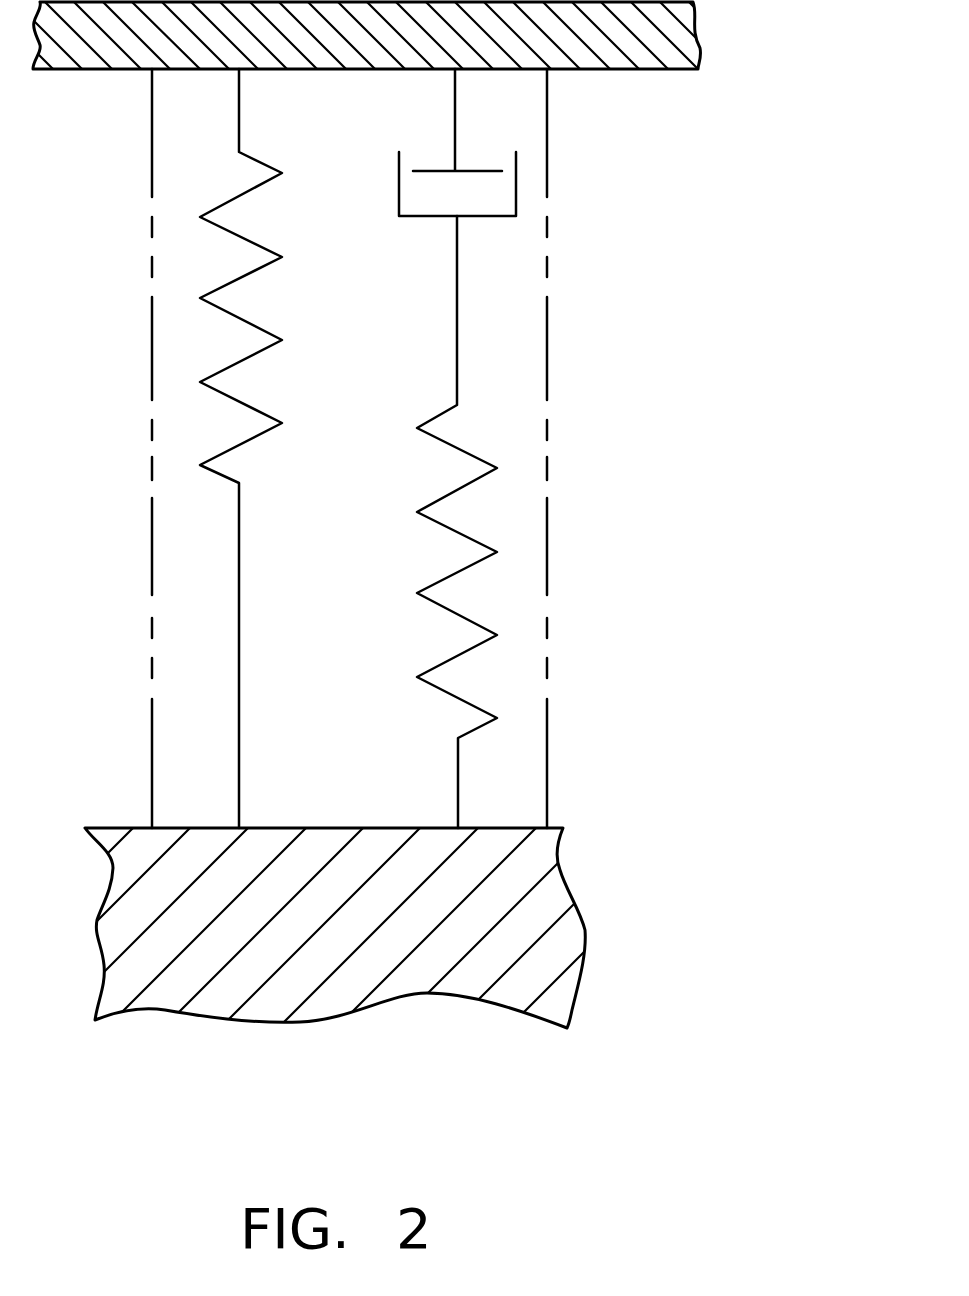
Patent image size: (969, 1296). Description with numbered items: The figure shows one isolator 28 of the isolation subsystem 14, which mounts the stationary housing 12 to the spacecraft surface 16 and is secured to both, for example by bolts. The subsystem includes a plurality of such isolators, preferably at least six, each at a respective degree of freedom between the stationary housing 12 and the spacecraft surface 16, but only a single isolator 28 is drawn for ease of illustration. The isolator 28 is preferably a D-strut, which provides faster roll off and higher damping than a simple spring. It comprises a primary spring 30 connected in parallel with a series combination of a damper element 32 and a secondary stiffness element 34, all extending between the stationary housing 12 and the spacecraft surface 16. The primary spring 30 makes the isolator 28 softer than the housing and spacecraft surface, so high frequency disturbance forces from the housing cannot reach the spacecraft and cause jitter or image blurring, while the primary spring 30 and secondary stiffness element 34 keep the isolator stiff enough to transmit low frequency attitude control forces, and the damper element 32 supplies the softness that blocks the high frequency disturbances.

The stationary housing 12 is at (700, 48).
The isolation subsystem 14 is at (660, 396).
The spacecraft surface 16 is at (587, 928).
The isolator 28 is at (547, 565).
The primary spring 30 is at (242, 398).
The series damper element 32 is at (428, 218).
The secondary stiffness element 34 is at (447, 693).